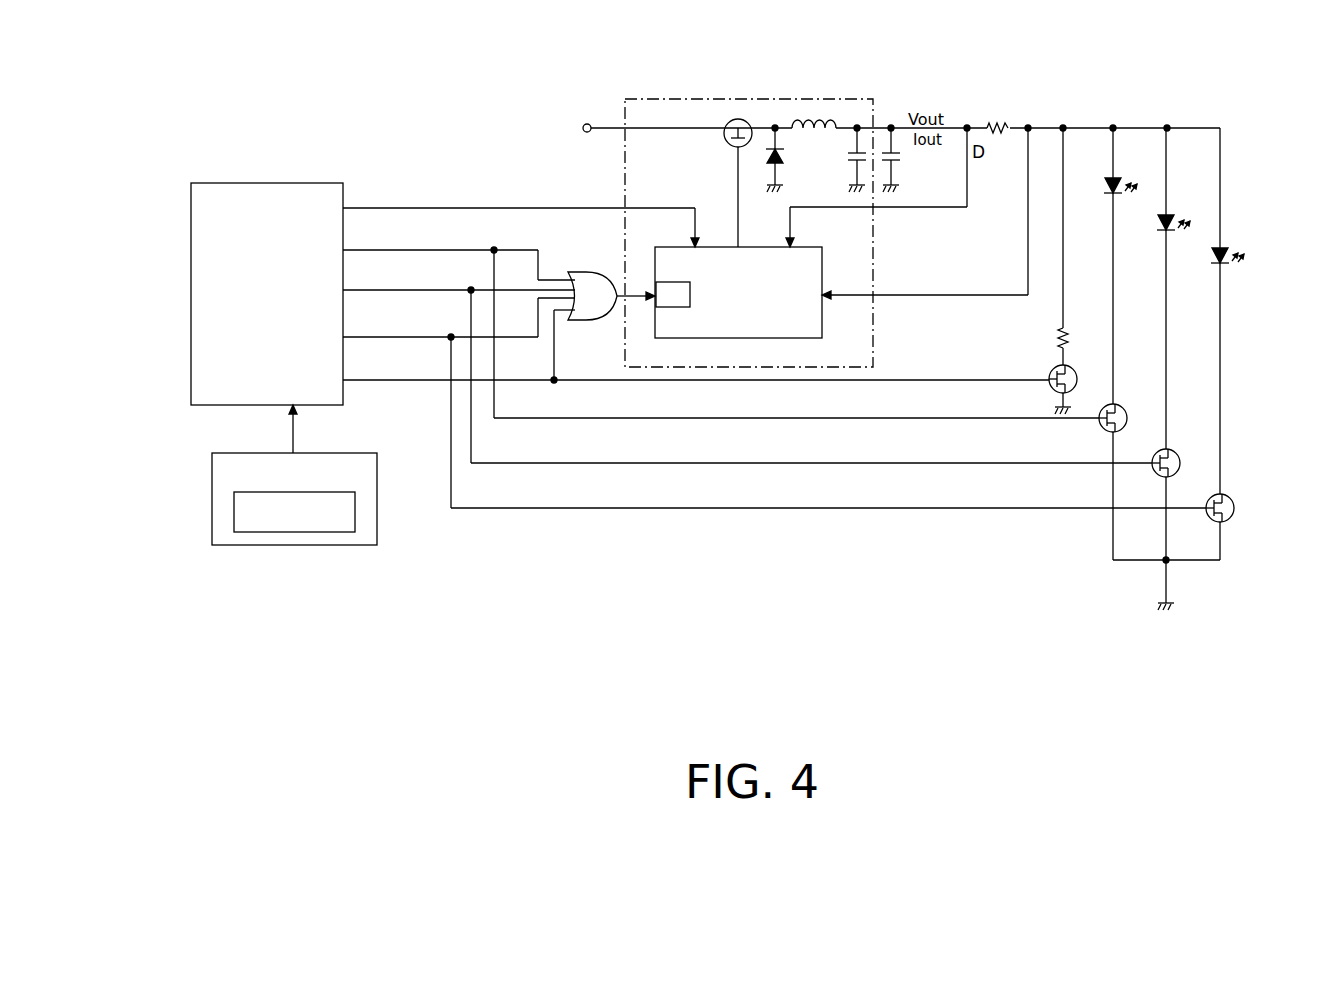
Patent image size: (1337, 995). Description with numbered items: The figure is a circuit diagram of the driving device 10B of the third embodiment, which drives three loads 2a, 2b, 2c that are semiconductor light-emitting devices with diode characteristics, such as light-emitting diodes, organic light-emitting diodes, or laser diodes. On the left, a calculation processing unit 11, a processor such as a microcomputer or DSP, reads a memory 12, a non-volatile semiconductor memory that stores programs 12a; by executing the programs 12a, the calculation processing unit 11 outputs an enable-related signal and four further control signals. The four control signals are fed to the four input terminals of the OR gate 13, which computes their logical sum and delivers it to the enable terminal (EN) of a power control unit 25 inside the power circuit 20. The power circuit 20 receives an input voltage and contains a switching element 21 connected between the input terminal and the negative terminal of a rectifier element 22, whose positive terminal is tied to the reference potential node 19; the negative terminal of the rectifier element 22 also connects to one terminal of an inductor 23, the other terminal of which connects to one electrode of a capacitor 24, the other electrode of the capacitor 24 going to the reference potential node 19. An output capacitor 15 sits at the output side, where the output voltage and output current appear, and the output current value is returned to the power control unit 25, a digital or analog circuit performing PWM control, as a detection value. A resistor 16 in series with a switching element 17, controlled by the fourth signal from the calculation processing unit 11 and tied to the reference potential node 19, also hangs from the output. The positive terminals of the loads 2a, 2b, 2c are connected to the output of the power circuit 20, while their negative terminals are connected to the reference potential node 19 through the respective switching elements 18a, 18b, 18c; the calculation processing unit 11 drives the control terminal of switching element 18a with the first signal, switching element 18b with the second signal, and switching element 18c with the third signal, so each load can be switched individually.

The driving device 10B is at (360, 92).
The calculation processing unit 11 is at (318, 183).
The memory 12 is at (358, 453).
The programs 12a is at (358, 510).
The OR gate 13 is at (583, 274).
The output capacitor 15 is at (902, 158).
The resistor 16 is at (1069, 331).
The switching element 17 is at (1078, 376).
The switching element 18a is at (1119, 406).
The switching element 18b is at (1171, 448).
The switching element 18c is at (1227, 522).
The reference potential node 19 is at (775, 196).
The power circuit 20 is at (873, 99).
The switching element 21 is at (727, 146).
The rectifier element 22 is at (770, 158).
The inductor 23 is at (825, 137).
The capacitor 24 is at (847, 158).
The power control unit 25 is at (822, 273).
The load 2a is at (1120, 180).
The load 2b is at (1173, 218).
The load 2c is at (1226, 252).